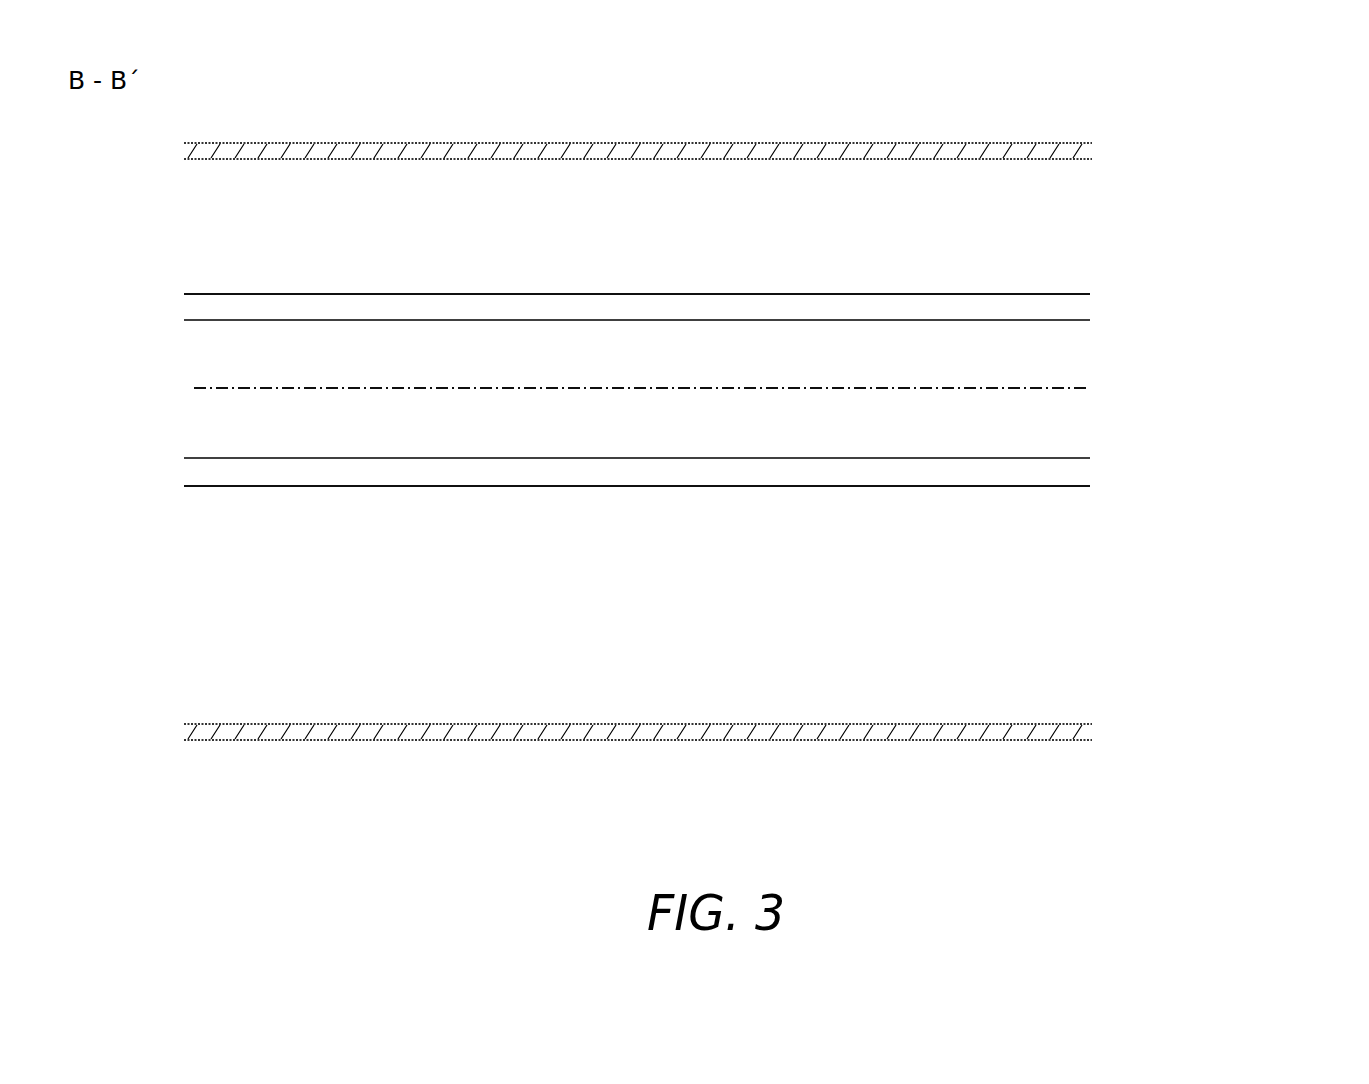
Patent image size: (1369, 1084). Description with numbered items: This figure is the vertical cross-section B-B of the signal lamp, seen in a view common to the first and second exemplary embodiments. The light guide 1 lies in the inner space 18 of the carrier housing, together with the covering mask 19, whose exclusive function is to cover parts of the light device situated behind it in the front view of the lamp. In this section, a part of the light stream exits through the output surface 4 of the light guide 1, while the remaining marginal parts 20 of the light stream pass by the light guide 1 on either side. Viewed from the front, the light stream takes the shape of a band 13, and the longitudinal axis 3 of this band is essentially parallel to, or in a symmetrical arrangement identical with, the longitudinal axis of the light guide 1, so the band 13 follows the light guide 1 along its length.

The light guide 1 is at (182, 320).
The longitudinal axis of the band 3 is at (1030, 383).
The output surface 4 is at (464, 352).
The band 13 is at (1097, 294).
The inner space 18 is at (1213, 165).
The covering mask 19 is at (743, 265).
The marginal parts of the light stream 20 is at (602, 308).